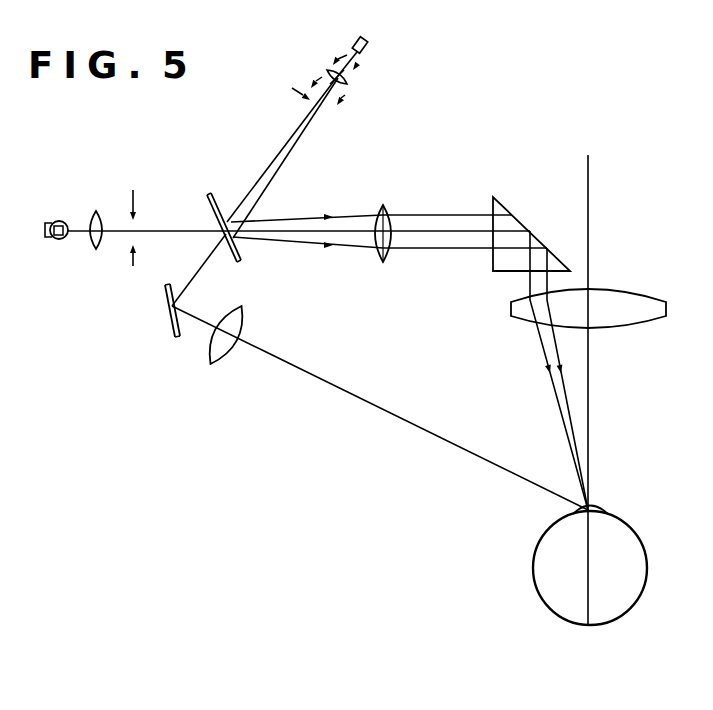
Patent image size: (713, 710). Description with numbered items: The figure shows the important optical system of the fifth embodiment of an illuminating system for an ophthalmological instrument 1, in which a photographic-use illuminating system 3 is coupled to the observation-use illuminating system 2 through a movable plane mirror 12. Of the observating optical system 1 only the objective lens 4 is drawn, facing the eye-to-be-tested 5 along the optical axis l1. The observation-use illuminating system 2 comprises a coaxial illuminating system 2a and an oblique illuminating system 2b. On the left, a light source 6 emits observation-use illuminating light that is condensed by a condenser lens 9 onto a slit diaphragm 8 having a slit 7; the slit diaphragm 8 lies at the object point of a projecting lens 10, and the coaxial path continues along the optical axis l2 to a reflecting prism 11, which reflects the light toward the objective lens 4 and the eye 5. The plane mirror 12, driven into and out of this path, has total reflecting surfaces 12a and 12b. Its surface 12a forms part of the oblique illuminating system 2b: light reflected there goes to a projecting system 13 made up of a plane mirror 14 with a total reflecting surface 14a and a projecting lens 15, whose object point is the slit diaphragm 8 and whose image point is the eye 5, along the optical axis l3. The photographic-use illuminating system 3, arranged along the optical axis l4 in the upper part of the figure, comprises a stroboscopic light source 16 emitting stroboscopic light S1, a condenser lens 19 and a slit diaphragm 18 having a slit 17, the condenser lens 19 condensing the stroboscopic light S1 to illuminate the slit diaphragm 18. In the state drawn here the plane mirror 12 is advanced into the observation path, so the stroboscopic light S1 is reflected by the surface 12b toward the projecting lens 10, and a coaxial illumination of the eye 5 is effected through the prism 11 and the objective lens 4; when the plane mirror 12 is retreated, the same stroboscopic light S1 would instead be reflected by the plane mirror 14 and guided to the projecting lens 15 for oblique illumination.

The observating optical system 1 is at (644, 396).
The observation-use illuminating system 2 is at (433, 196).
The coaxial illuminating system 2a is at (335, 254).
The oblique illuminating system 2b is at (313, 398).
The photographic-use illuminating system 3 is at (295, 60).
The objective lens 4 is at (645, 302).
The eye-to-be-tested 5 is at (647, 558).
The light source 6 is at (56, 221).
The slit 7 is at (130, 235).
The slit diaphragm 8 is at (133, 203).
The condenser lens 9 is at (93, 245).
The projecting lens 10 is at (380, 258).
The reflecting prism 11 is at (516, 217).
The plane mirror 12 is at (223, 179).
The total reflecting surface 12a is at (207, 202).
The reflecting surface 12b is at (218, 204).
The projecting system 13 is at (180, 367).
The plane mirror 14 is at (154, 293).
The total reflecting surface 14a is at (172, 285).
The projecting lens 15 is at (224, 352).
The stroboscopic light source 16 is at (368, 48).
The slit 17 is at (322, 113).
The slit diaphragm 18 is at (341, 116).
The condenser lens 19 is at (352, 82).
The stroboscopic light S1 is at (365, 214).
The optical axis of objective lens l1 is at (590, 234).
The optical axis of coaxial illuminating system l2 is at (434, 235).
The optical axis of oblique illuminating system l3 is at (397, 418).
The optical axis of photographic-use illuminating system l4 is at (278, 162).